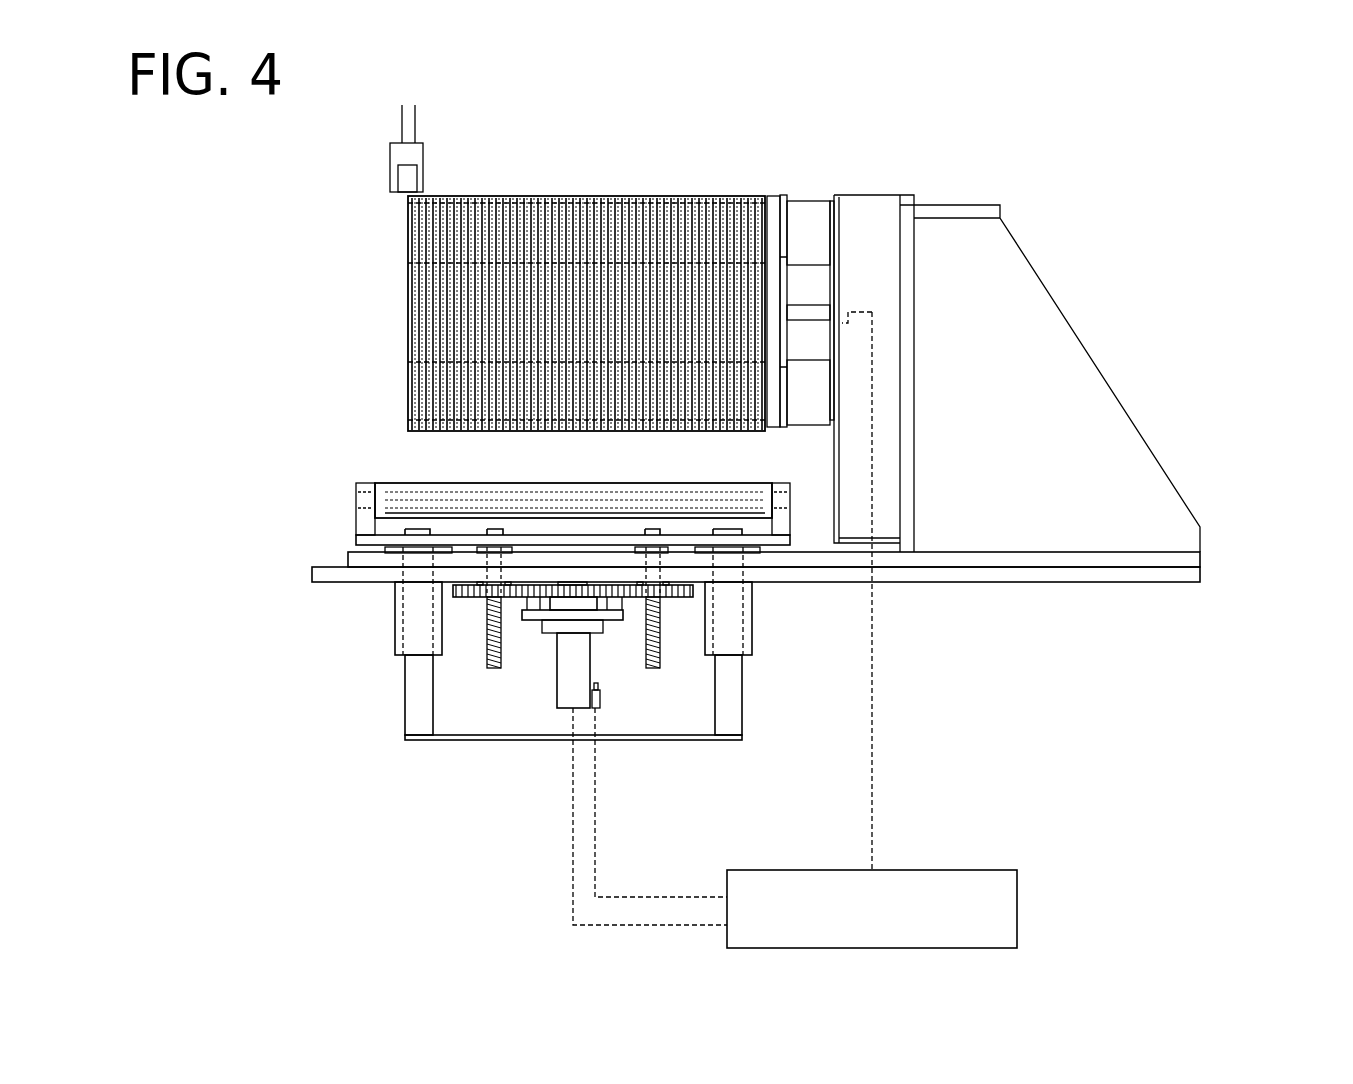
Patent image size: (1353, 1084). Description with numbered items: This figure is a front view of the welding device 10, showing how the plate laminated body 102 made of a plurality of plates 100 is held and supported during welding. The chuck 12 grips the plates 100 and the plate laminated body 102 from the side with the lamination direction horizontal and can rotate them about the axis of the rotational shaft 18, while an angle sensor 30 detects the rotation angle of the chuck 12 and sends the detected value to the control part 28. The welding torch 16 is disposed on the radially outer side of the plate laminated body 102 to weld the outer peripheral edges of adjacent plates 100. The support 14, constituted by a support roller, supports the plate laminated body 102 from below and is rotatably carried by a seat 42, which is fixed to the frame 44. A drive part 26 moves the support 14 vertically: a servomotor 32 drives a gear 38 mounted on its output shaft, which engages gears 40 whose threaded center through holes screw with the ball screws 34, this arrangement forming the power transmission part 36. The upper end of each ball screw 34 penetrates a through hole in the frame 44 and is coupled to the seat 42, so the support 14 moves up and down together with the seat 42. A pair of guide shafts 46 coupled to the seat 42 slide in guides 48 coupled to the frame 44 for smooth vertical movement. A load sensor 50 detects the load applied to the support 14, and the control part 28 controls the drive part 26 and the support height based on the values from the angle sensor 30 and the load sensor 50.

The welding device 10 is at (645, 74).
The chuck 12 is at (803, 195).
The support 14 is at (390, 487).
The welding torch 16 is at (423, 158).
The rotational shaft 18 is at (808, 304).
The drive part 26 is at (376, 598).
The control part 28 is at (903, 870).
The angle sensor 30 is at (848, 300).
The servomotor 32 is at (558, 688).
The ball screw 34 is at (487, 645).
The power transmission part 36 is at (550, 599).
The gear 38 is at (532, 662).
The gear 40 is at (433, 677).
The seat 42 is at (356, 522).
The frame 44 is at (1200, 558).
The guide shaft 46 is at (405, 692).
The guide 48 is at (395, 620).
The load sensor 50 is at (600, 692).
The plate 100 is at (598, 205).
The plate laminated body 102 is at (660, 190).